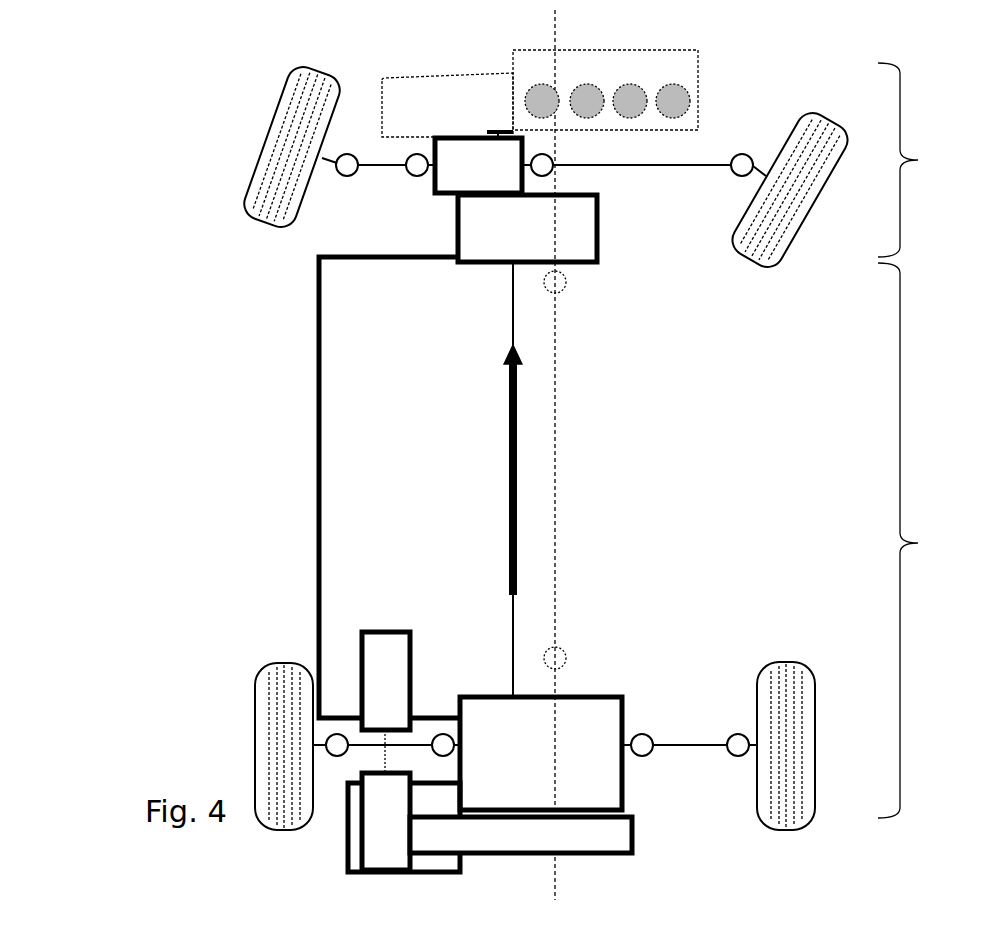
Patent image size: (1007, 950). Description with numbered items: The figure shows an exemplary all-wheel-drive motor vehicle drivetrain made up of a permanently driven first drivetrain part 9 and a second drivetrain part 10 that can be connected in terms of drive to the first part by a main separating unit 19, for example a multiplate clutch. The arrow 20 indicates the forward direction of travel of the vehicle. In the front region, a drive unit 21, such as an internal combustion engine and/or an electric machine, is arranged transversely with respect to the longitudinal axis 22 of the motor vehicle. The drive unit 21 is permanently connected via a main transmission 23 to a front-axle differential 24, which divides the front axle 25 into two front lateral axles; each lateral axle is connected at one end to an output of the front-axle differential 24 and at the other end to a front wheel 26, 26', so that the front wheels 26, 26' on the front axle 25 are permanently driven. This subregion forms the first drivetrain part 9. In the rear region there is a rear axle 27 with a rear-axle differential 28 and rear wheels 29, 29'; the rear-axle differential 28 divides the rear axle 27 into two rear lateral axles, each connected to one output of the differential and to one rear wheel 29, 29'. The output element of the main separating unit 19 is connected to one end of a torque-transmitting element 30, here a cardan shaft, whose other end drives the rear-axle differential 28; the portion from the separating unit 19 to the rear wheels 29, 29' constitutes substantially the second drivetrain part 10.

The first drivetrain part 9 is at (909, 160).
The second drivetrain part 10 is at (914, 540).
The main separating unit 19 is at (555, 232).
The arrow 20 is at (508, 440).
The drive unit 21 is at (573, 67).
The longitudinal axis 22 is at (553, 857).
The main transmission 23 is at (470, 90).
The front-axle differential 24 is at (452, 172).
The front axle 25 is at (372, 167).
The front wheel 26 is at (231, 147).
The front wheel 26' is at (864, 190).
The rear axle 27 is at (397, 748).
The rear-axle differential 28 is at (535, 717).
The rear wheel 29 is at (210, 746).
The rear wheel 29' is at (867, 746).
The torque-transmitting element 30 is at (555, 373).